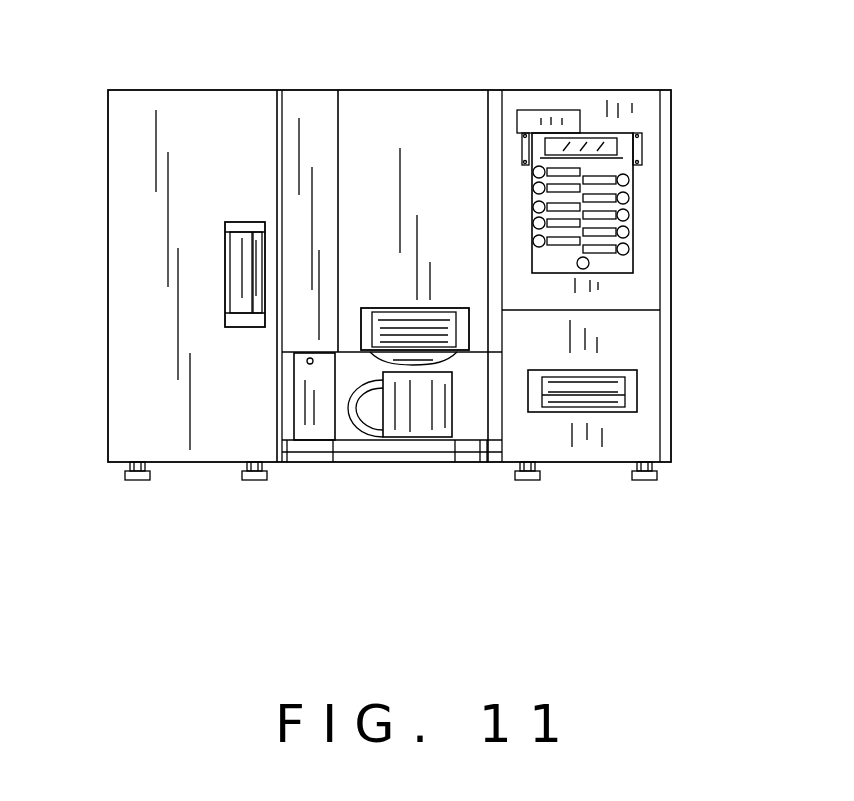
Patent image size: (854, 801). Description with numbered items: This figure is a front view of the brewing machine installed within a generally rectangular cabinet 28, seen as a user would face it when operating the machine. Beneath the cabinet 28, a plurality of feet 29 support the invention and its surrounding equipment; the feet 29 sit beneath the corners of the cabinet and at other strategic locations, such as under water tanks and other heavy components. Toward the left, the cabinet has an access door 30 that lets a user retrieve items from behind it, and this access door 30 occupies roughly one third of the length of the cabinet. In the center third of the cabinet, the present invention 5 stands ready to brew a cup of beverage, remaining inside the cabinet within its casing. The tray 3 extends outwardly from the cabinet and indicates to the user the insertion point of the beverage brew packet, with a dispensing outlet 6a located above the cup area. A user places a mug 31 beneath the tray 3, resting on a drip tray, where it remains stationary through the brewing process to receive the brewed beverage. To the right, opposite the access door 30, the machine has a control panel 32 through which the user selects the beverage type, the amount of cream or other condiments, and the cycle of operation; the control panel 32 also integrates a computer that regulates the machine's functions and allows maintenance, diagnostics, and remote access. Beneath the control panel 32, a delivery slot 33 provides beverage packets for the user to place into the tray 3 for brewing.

The cabinet 28 is at (108, 280).
The feet 29 is at (250, 483).
The access door 30 is at (168, 123).
The present invention 5 is at (387, 163).
The dispensing outlet 6a is at (408, 315).
The tray 3 is at (367, 353).
The mug 31 is at (424, 415).
The control panel 32 is at (633, 223).
The delivery slot 33 is at (593, 395).